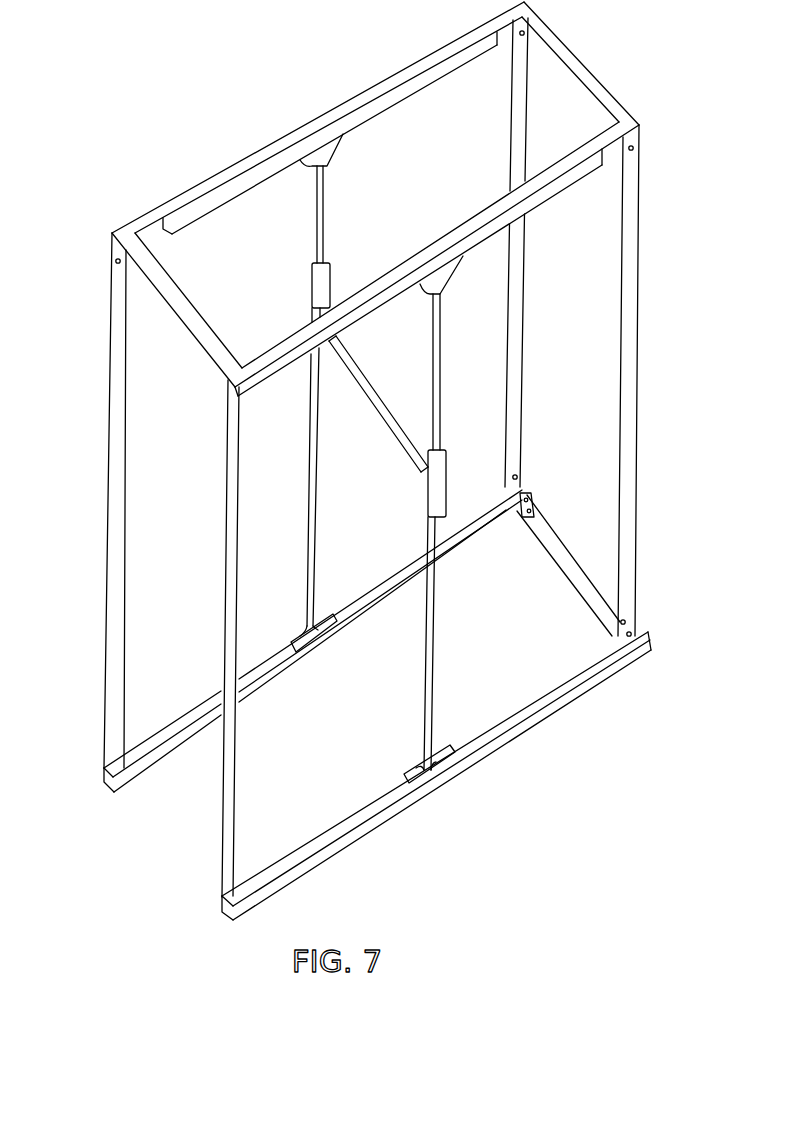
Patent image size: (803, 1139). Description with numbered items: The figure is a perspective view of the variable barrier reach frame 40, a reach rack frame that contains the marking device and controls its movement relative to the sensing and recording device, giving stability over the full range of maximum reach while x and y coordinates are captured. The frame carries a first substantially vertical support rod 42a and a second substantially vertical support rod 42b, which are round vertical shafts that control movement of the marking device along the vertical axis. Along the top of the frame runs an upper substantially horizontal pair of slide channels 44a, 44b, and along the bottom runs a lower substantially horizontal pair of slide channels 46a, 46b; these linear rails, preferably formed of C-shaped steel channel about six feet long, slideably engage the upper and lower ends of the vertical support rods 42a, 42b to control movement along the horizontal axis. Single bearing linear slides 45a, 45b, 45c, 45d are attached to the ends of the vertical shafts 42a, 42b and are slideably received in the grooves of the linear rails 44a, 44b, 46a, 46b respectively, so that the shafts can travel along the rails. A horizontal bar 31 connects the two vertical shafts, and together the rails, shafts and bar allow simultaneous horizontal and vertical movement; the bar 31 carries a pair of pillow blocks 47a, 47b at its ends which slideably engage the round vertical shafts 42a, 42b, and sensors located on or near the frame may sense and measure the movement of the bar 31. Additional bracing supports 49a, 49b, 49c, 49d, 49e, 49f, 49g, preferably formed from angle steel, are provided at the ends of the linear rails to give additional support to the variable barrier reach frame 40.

The variable barrier reach frame 40 is at (214, 104).
The horizontal bar 31 is at (400, 415).
The first substantially vertical support rod 42a is at (311, 411).
The second substantially vertical support rod 42b is at (432, 678).
The upper slide channel 44a is at (240, 167).
The upper slide channel 44b is at (374, 278).
The single bearing linear slide 45a is at (326, 123).
The single bearing linear slide 45b is at (433, 258).
The single bearing linear slide 45c is at (335, 630).
The single bearing linear slide 45d is at (408, 772).
The lower slide channel 46a is at (141, 766).
The lower slide channel 46b is at (300, 850).
The pillow block 47a is at (311, 298).
The pillow block 47b is at (422, 475).
The bracing support 49a is at (160, 278).
The bracing support 49b is at (228, 433).
The bracing support 49c is at (108, 360).
The bracing support 49d is at (577, 56).
The bracing support 49e is at (522, 116).
The bracing support 49f is at (636, 220).
The bracing support 49g is at (541, 514).